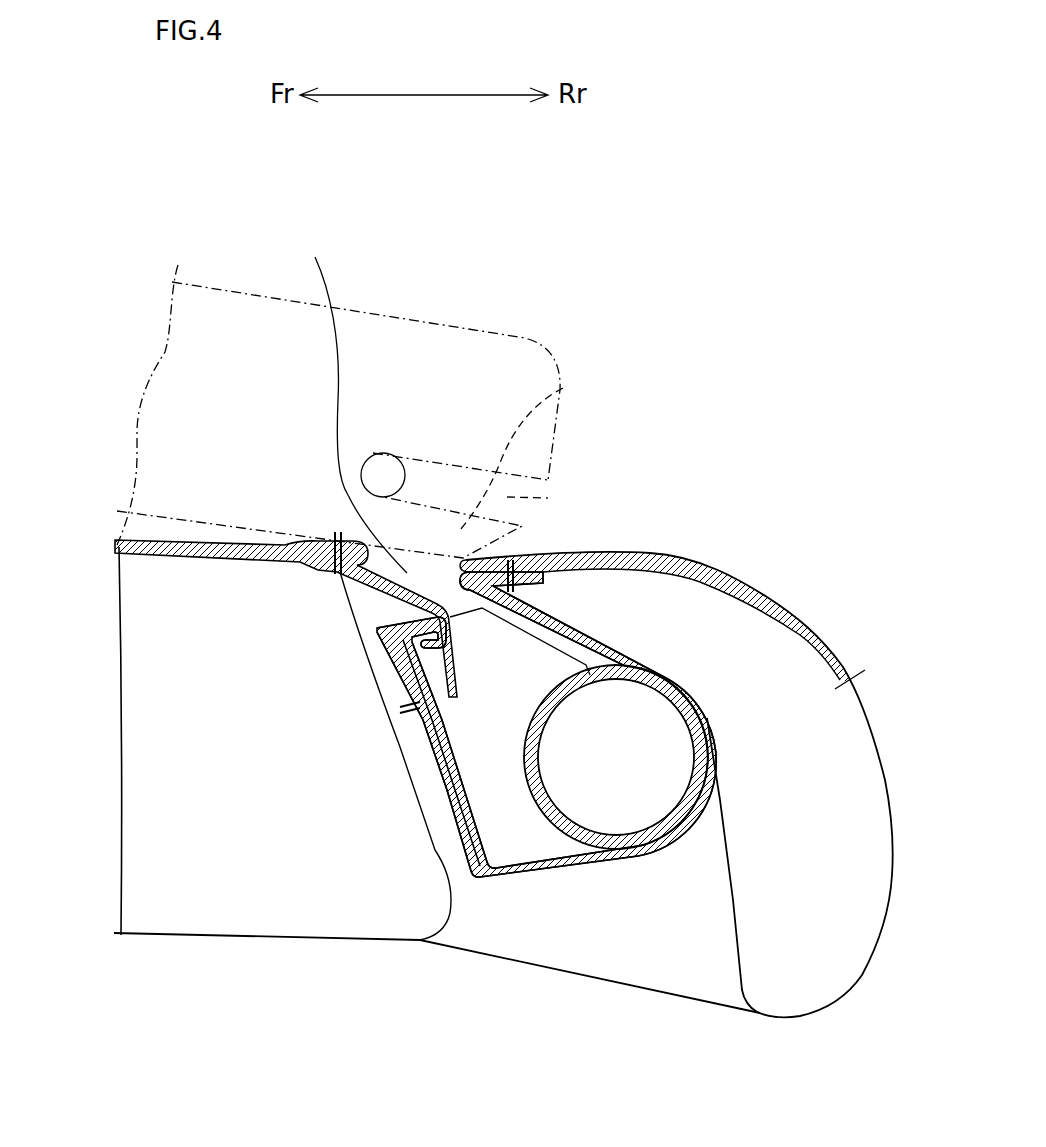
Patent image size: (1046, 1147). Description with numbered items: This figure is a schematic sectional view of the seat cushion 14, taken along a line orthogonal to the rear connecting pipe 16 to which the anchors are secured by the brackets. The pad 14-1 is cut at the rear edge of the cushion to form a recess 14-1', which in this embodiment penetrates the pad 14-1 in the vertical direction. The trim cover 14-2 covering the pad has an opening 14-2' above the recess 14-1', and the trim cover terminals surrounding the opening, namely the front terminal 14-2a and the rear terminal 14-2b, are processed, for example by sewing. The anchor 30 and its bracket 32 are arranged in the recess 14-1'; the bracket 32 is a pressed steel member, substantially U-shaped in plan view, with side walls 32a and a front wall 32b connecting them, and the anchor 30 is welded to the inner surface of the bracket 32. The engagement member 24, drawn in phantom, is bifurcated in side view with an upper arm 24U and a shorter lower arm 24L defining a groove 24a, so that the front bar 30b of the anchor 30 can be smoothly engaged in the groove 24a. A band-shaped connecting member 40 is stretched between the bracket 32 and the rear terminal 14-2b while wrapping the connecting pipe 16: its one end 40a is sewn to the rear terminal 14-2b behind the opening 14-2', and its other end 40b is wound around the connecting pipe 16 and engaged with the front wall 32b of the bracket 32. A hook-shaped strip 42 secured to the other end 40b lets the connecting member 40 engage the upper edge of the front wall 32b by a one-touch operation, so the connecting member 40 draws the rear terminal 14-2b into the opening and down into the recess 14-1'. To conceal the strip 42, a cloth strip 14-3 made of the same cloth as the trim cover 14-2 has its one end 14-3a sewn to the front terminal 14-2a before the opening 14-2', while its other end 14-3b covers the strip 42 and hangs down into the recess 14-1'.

The seat cushion 14 is at (461, 758).
The pad 14-1 is at (282, 774).
The recess 14-1' is at (590, 1008).
The trim cover 14-2 is at (676, 771).
The opening 14-2' is at (343, 399).
The front terminal 14-2a is at (333, 548).
The rear terminal 14-2b is at (530, 556).
The cloth strip 14-3 is at (355, 588).
The one end of cloth strip 14-3a is at (333, 566).
The other end of cloth strip 14-3b is at (462, 697).
The rear connecting pipe 16 is at (633, 838).
The engagement member 24 is at (220, 300).
The upper arm 24U is at (548, 342).
The lower arm 24L is at (563, 390).
The groove 24a is at (552, 498).
The anchor 30 is at (428, 383).
The front bar 30b is at (382, 467).
The bracket 32 is at (564, 828).
The side wall 32a is at (530, 880).
The front wall 32b is at (508, 880).
The connecting member 40 is at (495, 798).
The one end of connecting member 40a is at (545, 583).
The other end of connecting member 40b is at (385, 650).
The hook-shaped strip 42 is at (378, 634).